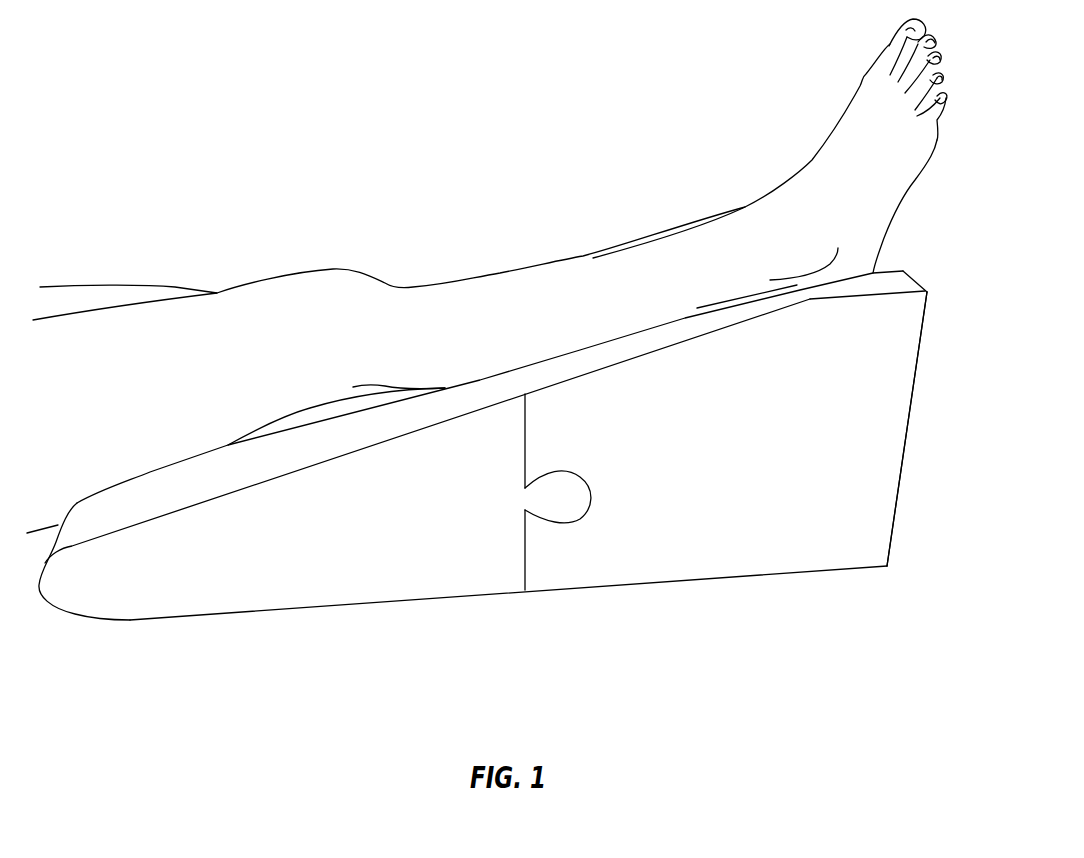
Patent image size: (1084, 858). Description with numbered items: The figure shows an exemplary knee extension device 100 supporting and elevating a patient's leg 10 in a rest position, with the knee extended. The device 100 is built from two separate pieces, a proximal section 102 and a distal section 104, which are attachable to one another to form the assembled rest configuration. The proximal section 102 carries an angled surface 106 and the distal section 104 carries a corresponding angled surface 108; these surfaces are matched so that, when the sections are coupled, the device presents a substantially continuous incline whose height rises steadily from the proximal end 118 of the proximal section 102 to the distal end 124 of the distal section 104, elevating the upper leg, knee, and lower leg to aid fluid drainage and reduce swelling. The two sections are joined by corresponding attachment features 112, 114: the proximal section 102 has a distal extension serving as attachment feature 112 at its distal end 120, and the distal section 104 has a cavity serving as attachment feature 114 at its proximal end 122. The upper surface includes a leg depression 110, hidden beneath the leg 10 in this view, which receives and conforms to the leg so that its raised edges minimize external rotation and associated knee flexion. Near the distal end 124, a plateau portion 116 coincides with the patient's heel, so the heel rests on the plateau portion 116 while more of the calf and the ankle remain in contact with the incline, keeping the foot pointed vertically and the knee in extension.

The knee extension device 100 is at (156, 97).
The patient's leg 10 is at (128, 337).
The proximal section 102 is at (253, 588).
The distal section 104 is at (795, 552).
The angled surface 106 is at (325, 440).
The angled surface 108 is at (590, 362).
The leg depression 110 is at (762, 287).
The attachment feature 112 is at (575, 497).
The attachment feature 114 is at (598, 493).
The plateau portion 116 is at (893, 275).
The proximal end 118 is at (38, 585).
The distal end 120 is at (527, 530).
The proximal end 122 is at (527, 557).
The distal end 124 is at (897, 533).